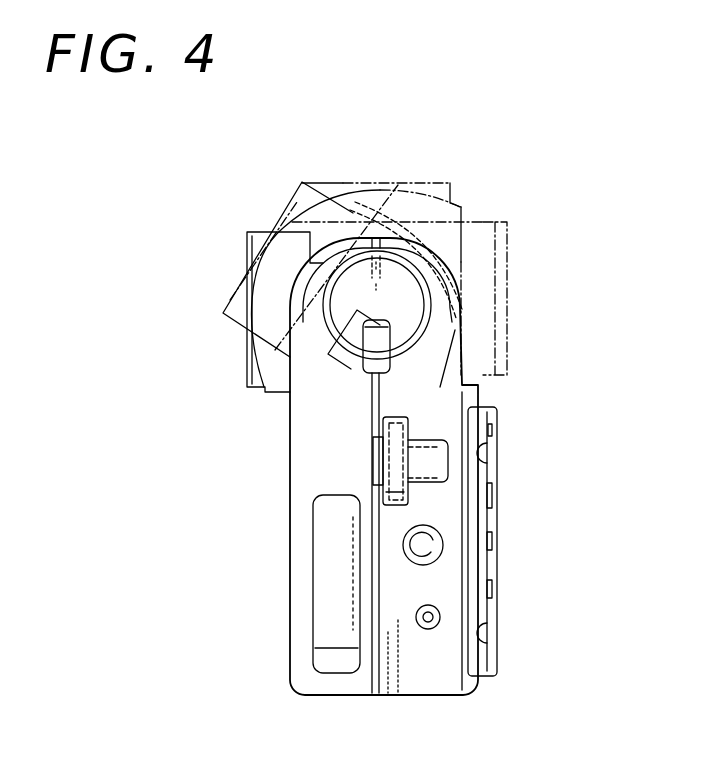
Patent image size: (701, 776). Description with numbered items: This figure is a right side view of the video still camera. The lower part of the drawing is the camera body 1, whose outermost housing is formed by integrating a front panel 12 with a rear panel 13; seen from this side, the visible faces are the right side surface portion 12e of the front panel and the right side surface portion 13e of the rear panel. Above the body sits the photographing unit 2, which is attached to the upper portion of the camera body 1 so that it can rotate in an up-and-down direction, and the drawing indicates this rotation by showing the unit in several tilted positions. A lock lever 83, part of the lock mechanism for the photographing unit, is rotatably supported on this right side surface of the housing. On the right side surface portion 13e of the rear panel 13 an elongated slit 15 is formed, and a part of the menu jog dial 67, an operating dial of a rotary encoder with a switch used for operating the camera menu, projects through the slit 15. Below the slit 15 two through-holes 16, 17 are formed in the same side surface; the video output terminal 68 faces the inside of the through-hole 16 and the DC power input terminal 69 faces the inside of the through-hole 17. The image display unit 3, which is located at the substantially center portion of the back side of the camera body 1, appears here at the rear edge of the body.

The camera body 1 is at (384, 451).
The photographing unit 2 is at (226, 222).
The image display unit 3 is at (262, 255).
The front panel 12 is at (302, 502).
The right side surface portion of the front panel 12e is at (288, 473).
The rear panel 13 is at (470, 402).
The right side surface portion of the rear panel 13e is at (438, 390).
The slit 15 is at (408, 427).
The through-hole 16 is at (445, 557).
The through-hole 17 is at (440, 617).
The menu jog dial 67 is at (393, 487).
The video output terminal 68 is at (431, 543).
The DC power input terminal 69 is at (432, 622).
The lock lever 83 is at (400, 313).